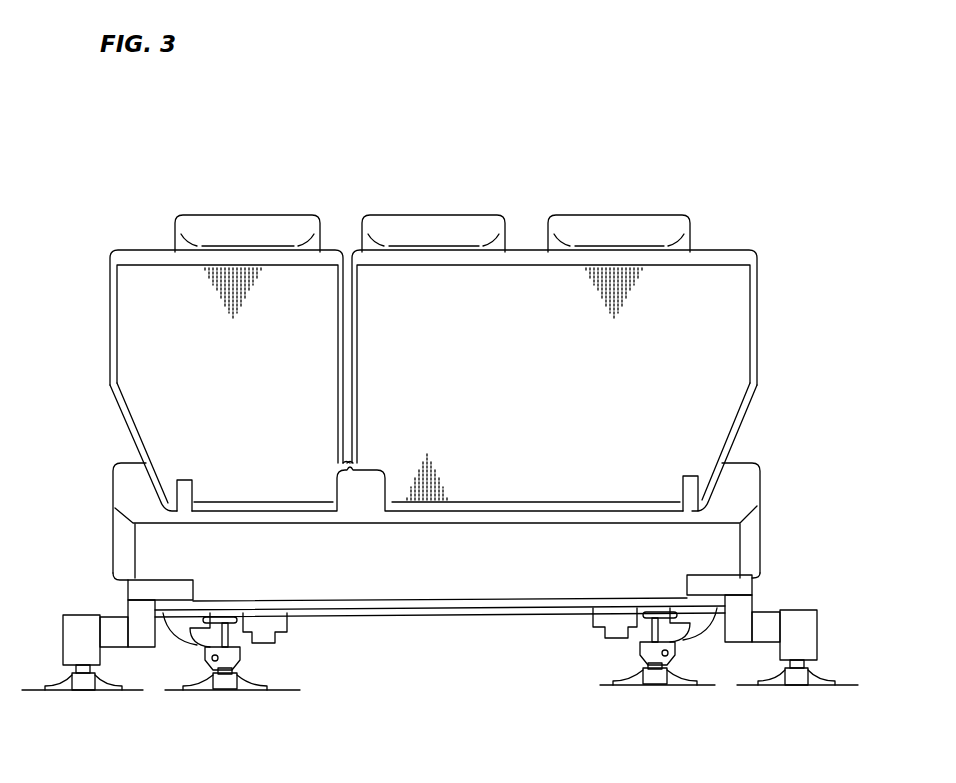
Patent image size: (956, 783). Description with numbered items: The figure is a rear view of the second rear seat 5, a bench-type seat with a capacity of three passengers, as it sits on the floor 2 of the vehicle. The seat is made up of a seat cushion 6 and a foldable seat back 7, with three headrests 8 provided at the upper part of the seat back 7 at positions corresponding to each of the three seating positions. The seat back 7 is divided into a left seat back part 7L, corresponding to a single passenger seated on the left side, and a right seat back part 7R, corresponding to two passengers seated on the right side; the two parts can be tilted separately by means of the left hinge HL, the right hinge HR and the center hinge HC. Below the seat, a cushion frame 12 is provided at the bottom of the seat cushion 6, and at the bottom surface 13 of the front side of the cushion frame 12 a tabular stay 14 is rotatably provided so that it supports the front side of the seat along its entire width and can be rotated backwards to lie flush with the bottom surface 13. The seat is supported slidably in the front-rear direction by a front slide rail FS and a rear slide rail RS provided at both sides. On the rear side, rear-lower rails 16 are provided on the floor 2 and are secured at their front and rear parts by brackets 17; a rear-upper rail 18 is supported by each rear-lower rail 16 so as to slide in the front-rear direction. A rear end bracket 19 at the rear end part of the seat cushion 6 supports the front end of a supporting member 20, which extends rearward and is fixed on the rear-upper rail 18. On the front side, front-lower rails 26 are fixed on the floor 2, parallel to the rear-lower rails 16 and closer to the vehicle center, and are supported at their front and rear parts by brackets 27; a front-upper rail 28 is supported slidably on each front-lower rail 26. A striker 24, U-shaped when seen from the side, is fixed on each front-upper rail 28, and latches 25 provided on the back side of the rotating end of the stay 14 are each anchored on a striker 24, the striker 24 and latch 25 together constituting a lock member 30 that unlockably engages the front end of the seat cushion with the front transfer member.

The floor 2 is at (32, 688).
The second rear seat 5 is at (752, 212).
The seat cushion 6 is at (762, 508).
The seat back 7 is at (770, 330).
The left seat back part 7L is at (133, 250).
The right seat back part 7R is at (722, 250).
The headrests 8 is at (250, 215).
The cushion frame 12 is at (540, 612).
The bottom surface 13 is at (338, 612).
The stay 14 is at (453, 616).
The rear-lower rails 16 is at (82, 690).
The brackets 17 is at (62, 693).
The rear-upper rail 18 is at (100, 668).
The rear end bracket 19 is at (128, 615).
The supporting member 20 is at (77, 613).
The striker 24 is at (220, 637).
The latches 25 is at (247, 620).
The front-lower rails 26 is at (225, 689).
The brackets 27 is at (245, 691).
The front-upper rail 28 is at (213, 668).
The lock member 30 is at (200, 655).
The left hinge HL is at (178, 488).
The right hinge HR is at (690, 487).
The center hinge HC is at (362, 488).
The rear slide rail RS is at (53, 660).
The front slide rail FS is at (237, 665).